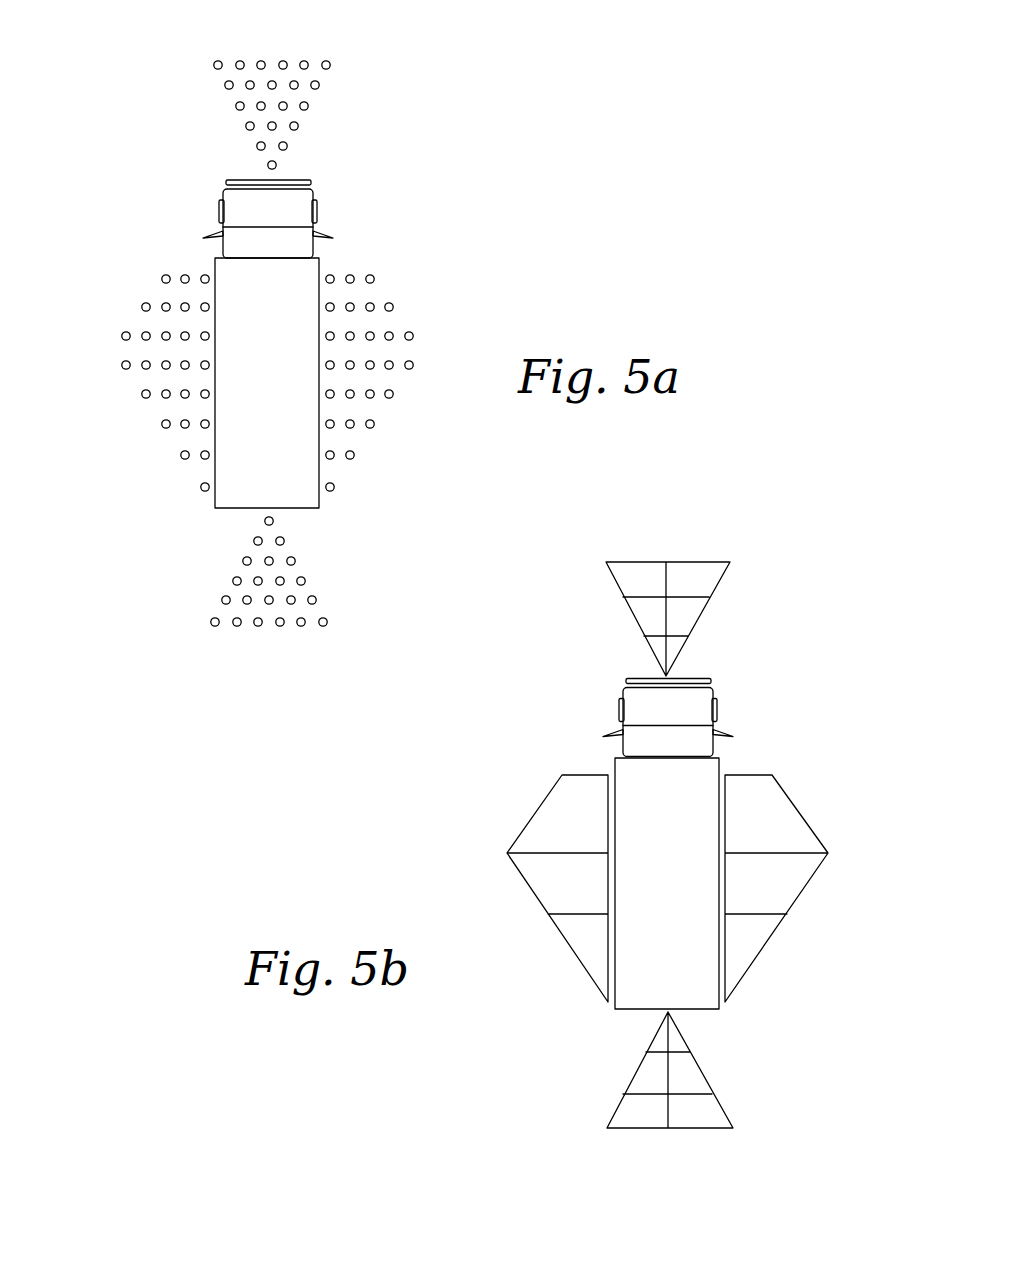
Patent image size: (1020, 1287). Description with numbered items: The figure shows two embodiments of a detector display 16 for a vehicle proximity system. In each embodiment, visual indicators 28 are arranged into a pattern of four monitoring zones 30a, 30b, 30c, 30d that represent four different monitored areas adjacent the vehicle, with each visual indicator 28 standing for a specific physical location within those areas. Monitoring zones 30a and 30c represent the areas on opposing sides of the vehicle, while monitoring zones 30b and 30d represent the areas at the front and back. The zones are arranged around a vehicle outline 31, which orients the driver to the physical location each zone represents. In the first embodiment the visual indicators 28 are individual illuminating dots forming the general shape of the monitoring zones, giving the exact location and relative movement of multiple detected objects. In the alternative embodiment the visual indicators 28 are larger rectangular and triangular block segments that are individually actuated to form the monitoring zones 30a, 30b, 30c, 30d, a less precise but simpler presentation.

In FIG. 5A, the detector display 16 is at (336, 221).
In FIG. 5B, the detector display 16 is at (747, 720).
In FIG. 5A, the visual indicators 28 is at (254, 361).
In FIG. 5B, the visual indicators 28 is at (671, 856).
In FIG. 5A, the monitoring zone 30a is at (134, 302).
In FIG. 5B, the monitoring zone 30a is at (500, 879).
In FIG. 5A, the monitoring zone 30b is at (270, 48).
In FIG. 5B, the monitoring zone 30b is at (668, 548).
In FIG. 5A, the monitoring zone 30c is at (402, 406).
In FIG. 5B, the monitoring zone 30c is at (811, 795).
In FIG. 5A, the monitoring zone 30d is at (287, 636).
In FIG. 5B, the monitoring zone 30d is at (717, 1068).
In FIG. 5A, the vehicle outline 31 is at (220, 497).
In FIG. 5B, the vehicle outline 31 is at (615, 1003).